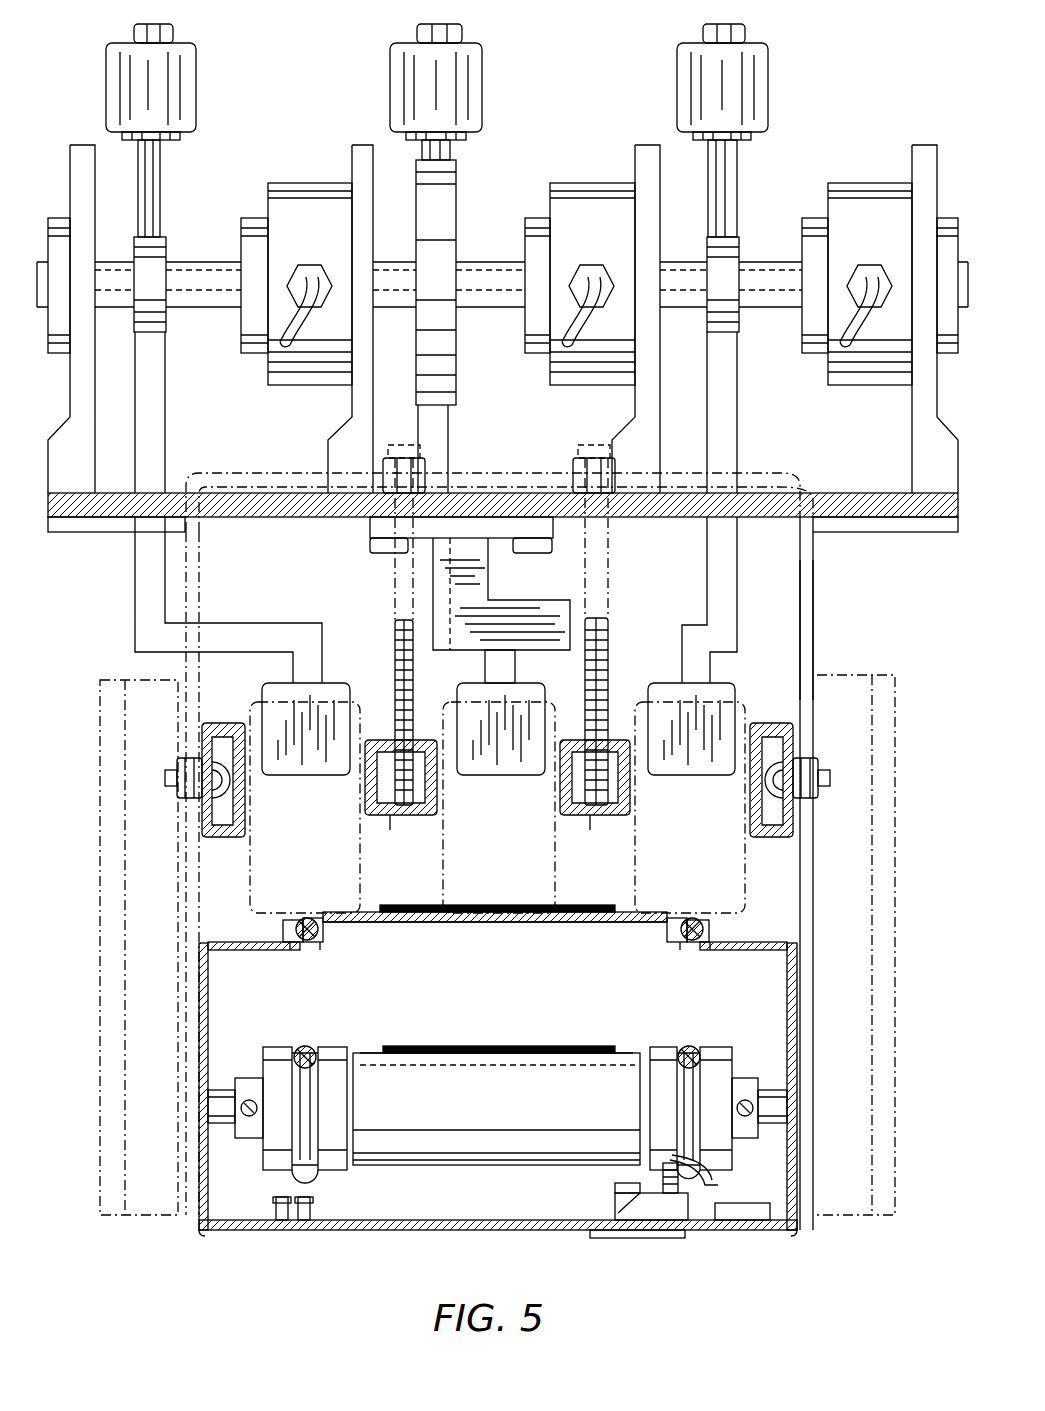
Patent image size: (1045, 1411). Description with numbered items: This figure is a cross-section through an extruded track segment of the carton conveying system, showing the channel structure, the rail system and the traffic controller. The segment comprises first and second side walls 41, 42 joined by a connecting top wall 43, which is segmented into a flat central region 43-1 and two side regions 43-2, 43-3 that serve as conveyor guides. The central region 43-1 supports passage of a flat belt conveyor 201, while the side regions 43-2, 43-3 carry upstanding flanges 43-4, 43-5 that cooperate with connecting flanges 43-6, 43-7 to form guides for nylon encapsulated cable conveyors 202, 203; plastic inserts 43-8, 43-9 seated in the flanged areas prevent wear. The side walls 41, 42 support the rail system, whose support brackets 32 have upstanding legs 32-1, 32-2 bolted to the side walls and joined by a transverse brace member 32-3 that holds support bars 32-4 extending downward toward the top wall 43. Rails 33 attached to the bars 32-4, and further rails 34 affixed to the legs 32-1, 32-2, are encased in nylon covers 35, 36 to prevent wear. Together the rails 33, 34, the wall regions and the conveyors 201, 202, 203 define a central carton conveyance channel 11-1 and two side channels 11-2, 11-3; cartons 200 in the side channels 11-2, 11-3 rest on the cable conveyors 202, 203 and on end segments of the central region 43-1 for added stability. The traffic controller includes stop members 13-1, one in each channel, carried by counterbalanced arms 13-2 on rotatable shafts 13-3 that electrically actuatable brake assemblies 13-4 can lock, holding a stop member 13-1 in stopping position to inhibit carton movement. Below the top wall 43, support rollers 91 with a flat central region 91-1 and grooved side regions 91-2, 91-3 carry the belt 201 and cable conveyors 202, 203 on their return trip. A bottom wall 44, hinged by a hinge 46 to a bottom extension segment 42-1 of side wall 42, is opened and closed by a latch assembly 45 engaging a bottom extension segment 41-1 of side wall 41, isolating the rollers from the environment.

The stop member 13-1 is at (322, 683).
The counterbalanced arm 13-2 is at (150, 395).
The rotatable shaft 13-3 is at (222, 252).
The electrically actuatable brake assembly 13-4 is at (342, 172).
The support bracket 32 is at (833, 600).
The upstanding leg 32-1 is at (808, 656).
The upstanding leg 32-2 is at (190, 667).
The transverse brace member 32-3 is at (768, 478).
The support bar 32-4 is at (413, 668).
The rail 33 is at (437, 798).
The rail 34 is at (226, 732).
The nylon cover 35 is at (390, 820).
The nylon cover 36 is at (240, 838).
The central carton conveyance channel 11-1 is at (555, 845).
The side carton conveyance channel 11-2 is at (360, 850).
The side carton conveyance channel 11-3 is at (745, 727).
The carton 200 is at (360, 722).
The flat belt conveyor 201 is at (568, 915).
The nylon encapsulated cable conveyor 202 is at (318, 940).
The nylon encapsulated cable conveyor 203 is at (684, 940).
The first side wall 41 is at (797, 1020).
The bottom extension segment 41-1 is at (760, 1232).
The second side wall 42 is at (199, 1015).
The bottom extension segment 42-1 is at (212, 1232).
The top wall 43 is at (380, 910).
The central region 43-1 is at (468, 922).
The side region 43-2 is at (275, 950).
The side region 43-3 is at (790, 945).
The upstanding flange 43-4 is at (283, 928).
The upstanding flange 43-5 is at (709, 930).
The connecting flange 43-6 is at (323, 932).
The connecting flange 43-7 is at (675, 935).
The plastic insert 43-8 is at (300, 948).
The plastic insert 43-9 is at (694, 948).
The bottom wall 44 is at (428, 1232).
The latch assembly 45 is at (665, 1235).
The hinge 46 is at (290, 1225).
The support roller 91 is at (628, 1043).
The flat central region 91-1 is at (553, 1046).
The grooved side region 91-2 is at (312, 1048).
The grooved side region 91-3 is at (702, 1050).